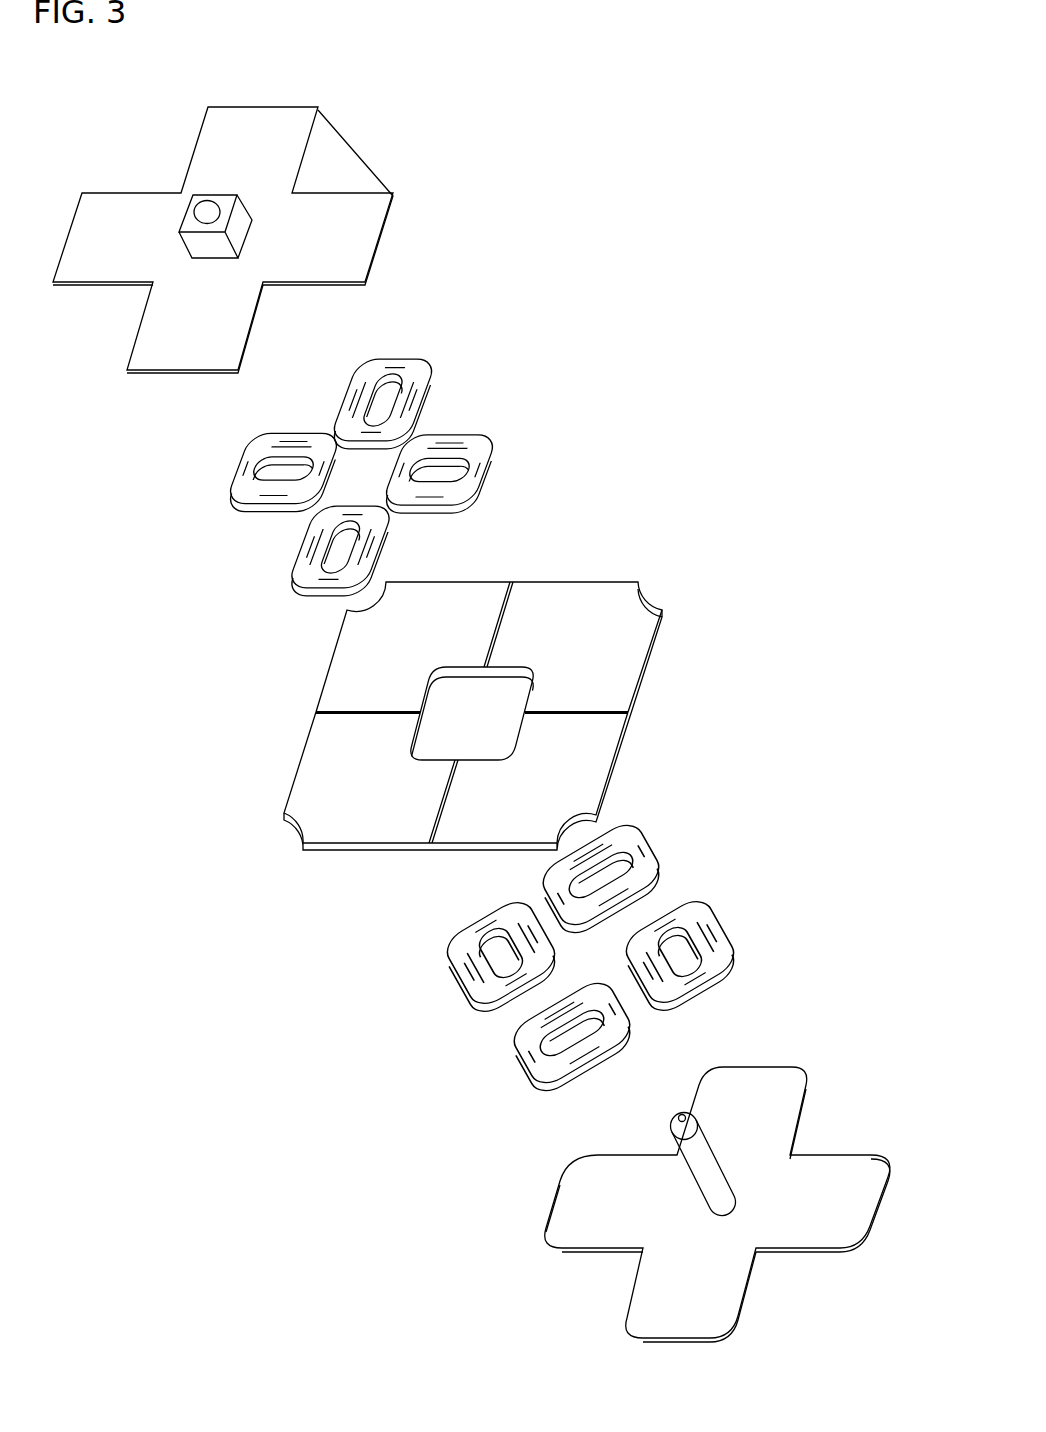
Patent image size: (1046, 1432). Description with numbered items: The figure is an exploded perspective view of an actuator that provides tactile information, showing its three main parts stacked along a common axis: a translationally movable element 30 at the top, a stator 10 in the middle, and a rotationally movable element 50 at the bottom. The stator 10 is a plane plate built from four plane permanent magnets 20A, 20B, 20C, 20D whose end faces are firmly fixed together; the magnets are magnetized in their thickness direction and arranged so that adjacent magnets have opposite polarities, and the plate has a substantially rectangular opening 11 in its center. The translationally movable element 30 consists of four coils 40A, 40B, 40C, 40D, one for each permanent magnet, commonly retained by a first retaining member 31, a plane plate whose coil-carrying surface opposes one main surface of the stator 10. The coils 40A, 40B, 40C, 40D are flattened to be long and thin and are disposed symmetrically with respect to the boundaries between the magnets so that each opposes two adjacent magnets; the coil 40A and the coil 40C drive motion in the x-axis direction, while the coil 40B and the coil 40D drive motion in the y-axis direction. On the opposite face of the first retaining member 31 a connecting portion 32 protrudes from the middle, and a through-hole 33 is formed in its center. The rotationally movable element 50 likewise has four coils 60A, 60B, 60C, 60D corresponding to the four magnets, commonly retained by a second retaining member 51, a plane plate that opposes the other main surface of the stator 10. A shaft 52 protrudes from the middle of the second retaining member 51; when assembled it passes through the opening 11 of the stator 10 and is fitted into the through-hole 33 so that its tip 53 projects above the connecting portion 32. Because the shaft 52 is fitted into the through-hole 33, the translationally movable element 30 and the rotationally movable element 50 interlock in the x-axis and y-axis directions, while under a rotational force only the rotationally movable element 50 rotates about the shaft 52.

The stator 10 is at (663, 635).
The opening 11 is at (418, 757).
The permanent magnet 20A is at (582, 582).
The permanent magnet 20B is at (473, 845).
The permanent magnet 20C is at (328, 845).
The permanent magnet 20D is at (440, 582).
The translationally movable element 30 is at (393, 176).
The first retaining member 31 is at (350, 198).
The connecting portion 32 is at (198, 197).
The through-hole 33 is at (214, 205).
The coil 40A is at (423, 368).
The coil 40B is at (472, 438).
The coil 40C is at (320, 595).
The coil 40D is at (238, 473).
The rotationally movable element 50 is at (835, 1090).
The second retaining member 51 is at (842, 1165).
The shaft 52 is at (722, 1170).
The tip 53 is at (690, 1114).
The coil 60A is at (643, 847).
The coil 60B is at (715, 928).
The coil 60C is at (522, 1065).
The coil 60D is at (458, 973).